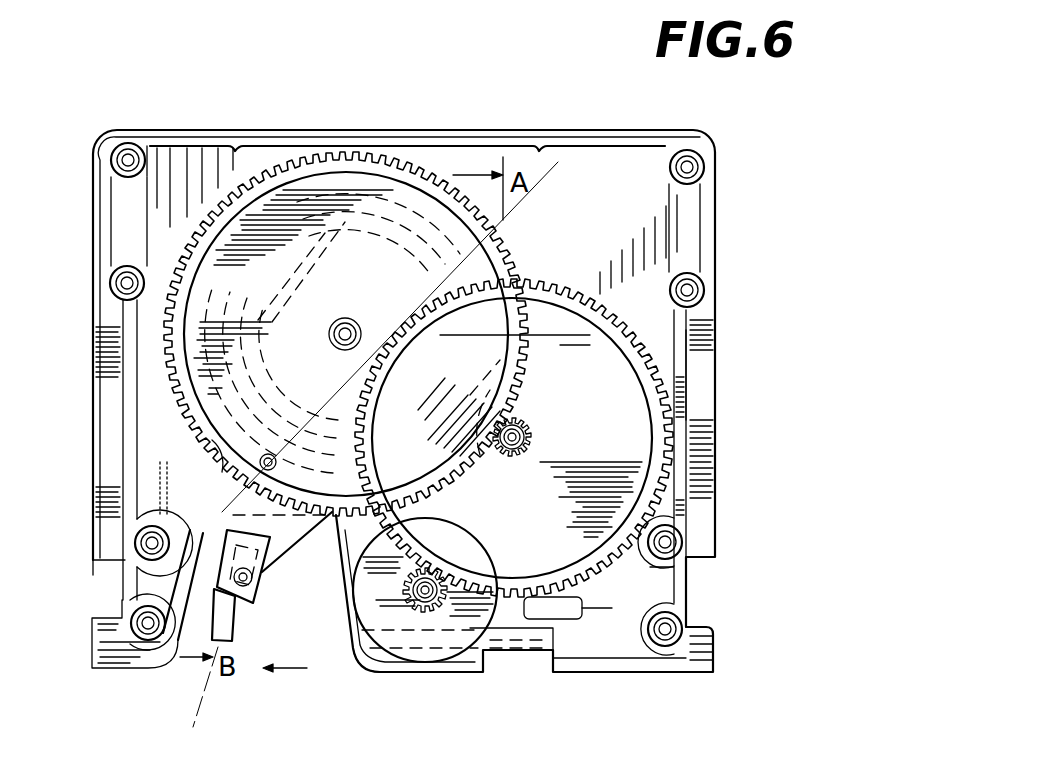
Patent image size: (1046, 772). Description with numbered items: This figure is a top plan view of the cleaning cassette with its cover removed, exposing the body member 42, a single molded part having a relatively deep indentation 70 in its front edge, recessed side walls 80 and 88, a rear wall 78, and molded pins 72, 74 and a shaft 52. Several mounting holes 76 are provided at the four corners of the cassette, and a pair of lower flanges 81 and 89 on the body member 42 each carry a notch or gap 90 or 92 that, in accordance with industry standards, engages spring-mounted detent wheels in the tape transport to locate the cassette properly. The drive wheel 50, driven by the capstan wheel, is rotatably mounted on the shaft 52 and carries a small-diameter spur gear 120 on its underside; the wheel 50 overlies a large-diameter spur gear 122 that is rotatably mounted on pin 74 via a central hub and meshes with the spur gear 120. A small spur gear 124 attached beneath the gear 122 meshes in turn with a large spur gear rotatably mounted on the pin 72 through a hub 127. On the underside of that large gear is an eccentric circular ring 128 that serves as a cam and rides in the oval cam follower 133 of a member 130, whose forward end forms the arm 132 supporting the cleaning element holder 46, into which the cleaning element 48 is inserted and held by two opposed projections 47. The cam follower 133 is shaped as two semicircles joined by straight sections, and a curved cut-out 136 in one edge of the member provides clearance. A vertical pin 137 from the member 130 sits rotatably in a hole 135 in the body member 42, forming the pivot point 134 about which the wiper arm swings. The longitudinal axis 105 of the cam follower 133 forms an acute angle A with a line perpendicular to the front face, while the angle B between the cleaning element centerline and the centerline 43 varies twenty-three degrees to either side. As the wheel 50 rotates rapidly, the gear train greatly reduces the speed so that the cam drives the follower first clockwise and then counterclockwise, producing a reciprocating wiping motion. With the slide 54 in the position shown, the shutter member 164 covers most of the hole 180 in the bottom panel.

The body member 42 is at (716, 352).
The centerline 43 is at (270, 130).
The cleaning element holder 46 is at (255, 598).
The opposed projections 47 is at (256, 578).
The cleaning element 48 is at (237, 623).
The drive wheel 50 is at (490, 565).
The shaft 52 is at (432, 582).
The slide 54 is at (605, 672).
The indentation 70 is at (194, 704).
The pin 72 is at (348, 318).
The pin 74 is at (520, 448).
The mounting holes 76 is at (112, 270).
The rear wall 78 is at (208, 130).
The recessed side wall 80 is at (123, 380).
The lower flange 81 is at (110, 432).
The recessed side wall 88 is at (688, 410).
The lower flange 89 is at (697, 486).
The notch 90 is at (120, 572).
The gap 92 is at (697, 603).
The longitudinal axis 105 is at (538, 183).
The small-diameter spur gear 120 is at (349, 648).
The large-diameter spur gear 122 is at (522, 280).
The small spur gear 124 is at (540, 437).
The hub 127 is at (334, 333).
The eccentric circular ring 128 is at (335, 334).
The member 130 is at (270, 307).
The arm 132 is at (283, 542).
The cam follower 133 is at (332, 333).
The pivot point 134 is at (212, 442).
The hole 135 is at (224, 505).
The curved cut-out 136 is at (524, 398).
The vertical pin 137 is at (222, 478).
The shutter member 164 is at (543, 612).
The hole 180 is at (578, 600).